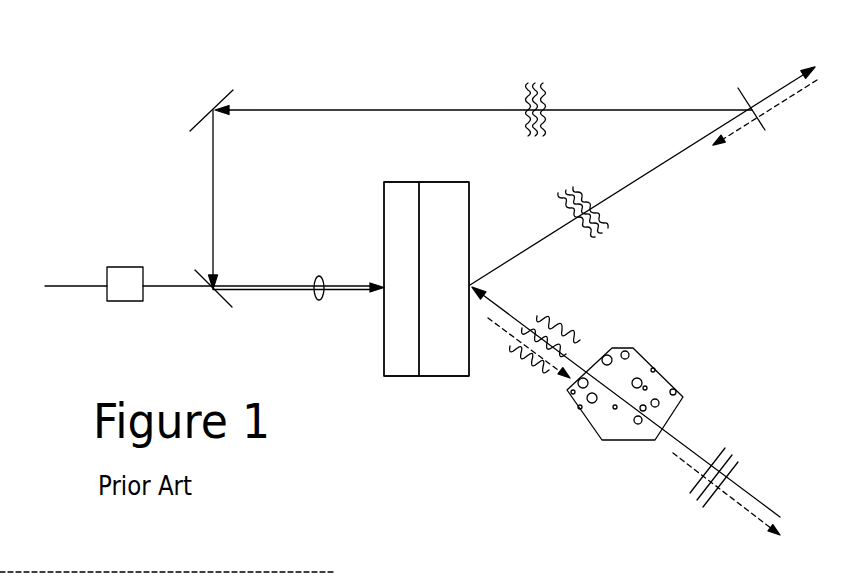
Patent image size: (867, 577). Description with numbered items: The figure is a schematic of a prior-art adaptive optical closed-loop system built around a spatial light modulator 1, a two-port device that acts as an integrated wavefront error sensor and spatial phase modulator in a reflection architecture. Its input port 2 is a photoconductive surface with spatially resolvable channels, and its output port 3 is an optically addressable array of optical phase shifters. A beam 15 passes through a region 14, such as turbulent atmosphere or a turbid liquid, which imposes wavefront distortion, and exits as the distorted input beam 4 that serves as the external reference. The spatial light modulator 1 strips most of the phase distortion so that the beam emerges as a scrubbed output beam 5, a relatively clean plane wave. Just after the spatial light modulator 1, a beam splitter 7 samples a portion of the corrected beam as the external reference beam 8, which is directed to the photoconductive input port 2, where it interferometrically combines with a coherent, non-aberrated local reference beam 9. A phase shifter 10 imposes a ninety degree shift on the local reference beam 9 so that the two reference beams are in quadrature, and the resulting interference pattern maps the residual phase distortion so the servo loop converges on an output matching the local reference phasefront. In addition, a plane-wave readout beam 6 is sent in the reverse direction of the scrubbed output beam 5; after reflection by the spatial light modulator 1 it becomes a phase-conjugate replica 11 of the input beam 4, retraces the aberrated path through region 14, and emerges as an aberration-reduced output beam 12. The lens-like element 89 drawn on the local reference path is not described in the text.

The spatial light modulator 1 is at (417, 396).
The input port 2 is at (410, 195).
The output port 3 is at (450, 205).
The distorted input beam 4 is at (507, 307).
The scrubbed output beam 5 is at (593, 200).
The readout beam 6 is at (773, 112).
The beam splitter 7 is at (745, 92).
The external reference beam 8 is at (527, 85).
The local reference beam 9 is at (60, 275).
The phase shifter 10 is at (118, 273).
The phase-conjugate replica 11 is at (503, 330).
The aberration-reduced output beam 12 is at (752, 513).
The region imposing wavefront distortion 14 is at (653, 370).
The beam 15 is at (755, 497).
The lens 89 is at (315, 277).